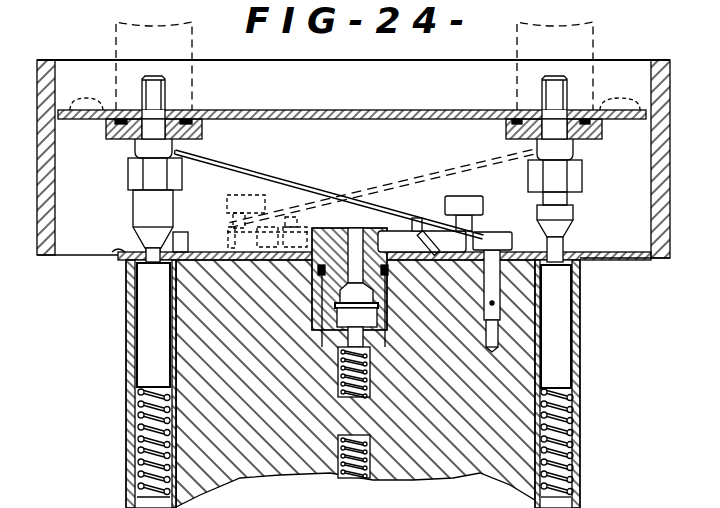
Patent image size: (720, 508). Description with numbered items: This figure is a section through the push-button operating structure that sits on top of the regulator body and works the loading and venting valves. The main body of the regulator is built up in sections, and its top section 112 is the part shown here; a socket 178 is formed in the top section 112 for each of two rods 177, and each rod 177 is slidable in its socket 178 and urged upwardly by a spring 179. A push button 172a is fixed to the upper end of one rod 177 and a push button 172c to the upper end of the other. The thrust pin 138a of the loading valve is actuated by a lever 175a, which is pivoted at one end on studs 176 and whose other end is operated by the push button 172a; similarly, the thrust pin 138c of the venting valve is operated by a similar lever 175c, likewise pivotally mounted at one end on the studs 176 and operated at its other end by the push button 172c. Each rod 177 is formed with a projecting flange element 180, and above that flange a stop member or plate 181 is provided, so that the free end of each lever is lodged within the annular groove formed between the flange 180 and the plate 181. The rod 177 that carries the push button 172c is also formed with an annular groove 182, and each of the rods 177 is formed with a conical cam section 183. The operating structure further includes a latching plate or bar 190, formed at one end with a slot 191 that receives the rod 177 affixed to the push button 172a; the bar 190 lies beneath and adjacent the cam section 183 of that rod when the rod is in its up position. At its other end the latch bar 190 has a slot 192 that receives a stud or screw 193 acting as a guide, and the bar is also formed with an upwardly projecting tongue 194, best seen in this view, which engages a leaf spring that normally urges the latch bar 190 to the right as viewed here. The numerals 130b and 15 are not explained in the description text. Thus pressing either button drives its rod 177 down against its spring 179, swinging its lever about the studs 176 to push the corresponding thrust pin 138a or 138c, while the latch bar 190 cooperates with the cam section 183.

The push button 172a is at (115, 41).
The push button 172c is at (597, 41).
The stop member or plate 181 is at (195, 140).
The projecting flange element 180 is at (128, 172).
The annular groove 182 is at (567, 198).
The conical cam section 183 is at (137, 230).
The stud or screw 193 is at (193, 238).
The slot 191 is at (193, 252).
The latching plate or bar 190 is at (125, 250).
The rod 177 is at (166, 301).
The socket 178 is at (143, 324).
The spring 179 is at (143, 418).
The lever 175a is at (272, 178).
The lever 175c is at (420, 176).
The studs 176 is at (236, 195).
The upwardly projecting tongue 194 is at (433, 247).
The thrust pin 138c is at (303, 218).
The thrust pin 138a is at (435, 215).
The slot 192 is at (530, 252).
The top section 112 is at (580, 470).
The valve 130b is at (322, 345).
The spring 15 is at (365, 470).